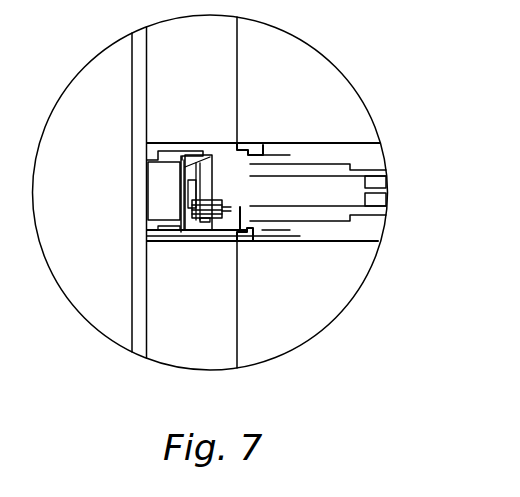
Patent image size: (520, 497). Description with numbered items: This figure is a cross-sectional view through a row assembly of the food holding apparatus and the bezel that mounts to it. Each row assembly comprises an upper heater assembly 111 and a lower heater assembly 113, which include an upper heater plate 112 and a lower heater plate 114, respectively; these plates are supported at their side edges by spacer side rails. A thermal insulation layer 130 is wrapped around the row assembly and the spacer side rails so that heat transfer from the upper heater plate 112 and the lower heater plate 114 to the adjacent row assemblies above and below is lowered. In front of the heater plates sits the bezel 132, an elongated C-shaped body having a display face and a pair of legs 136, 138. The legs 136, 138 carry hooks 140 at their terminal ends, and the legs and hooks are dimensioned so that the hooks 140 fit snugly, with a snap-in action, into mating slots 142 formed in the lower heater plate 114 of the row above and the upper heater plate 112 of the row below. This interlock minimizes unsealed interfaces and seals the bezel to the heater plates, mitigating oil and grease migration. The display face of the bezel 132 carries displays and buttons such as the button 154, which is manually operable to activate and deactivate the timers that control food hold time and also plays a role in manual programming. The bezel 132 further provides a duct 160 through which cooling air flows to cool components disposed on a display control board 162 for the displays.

The upper heater assembly 111 is at (330, 252).
The upper heater plate 112 is at (372, 242).
The lower heater assembly 113 is at (338, 127).
The lower heater plate 114 is at (364, 148).
The thermal insulation layer 130 is at (381, 183).
The bezel 132 is at (118, 245).
The leg 136 is at (178, 143).
The leg 138 is at (176, 240).
The hook 140 is at (247, 152).
The slot 142 is at (263, 145).
The button 154 is at (132, 199).
The duct 160 is at (220, 165).
The display control board 162 is at (200, 237).